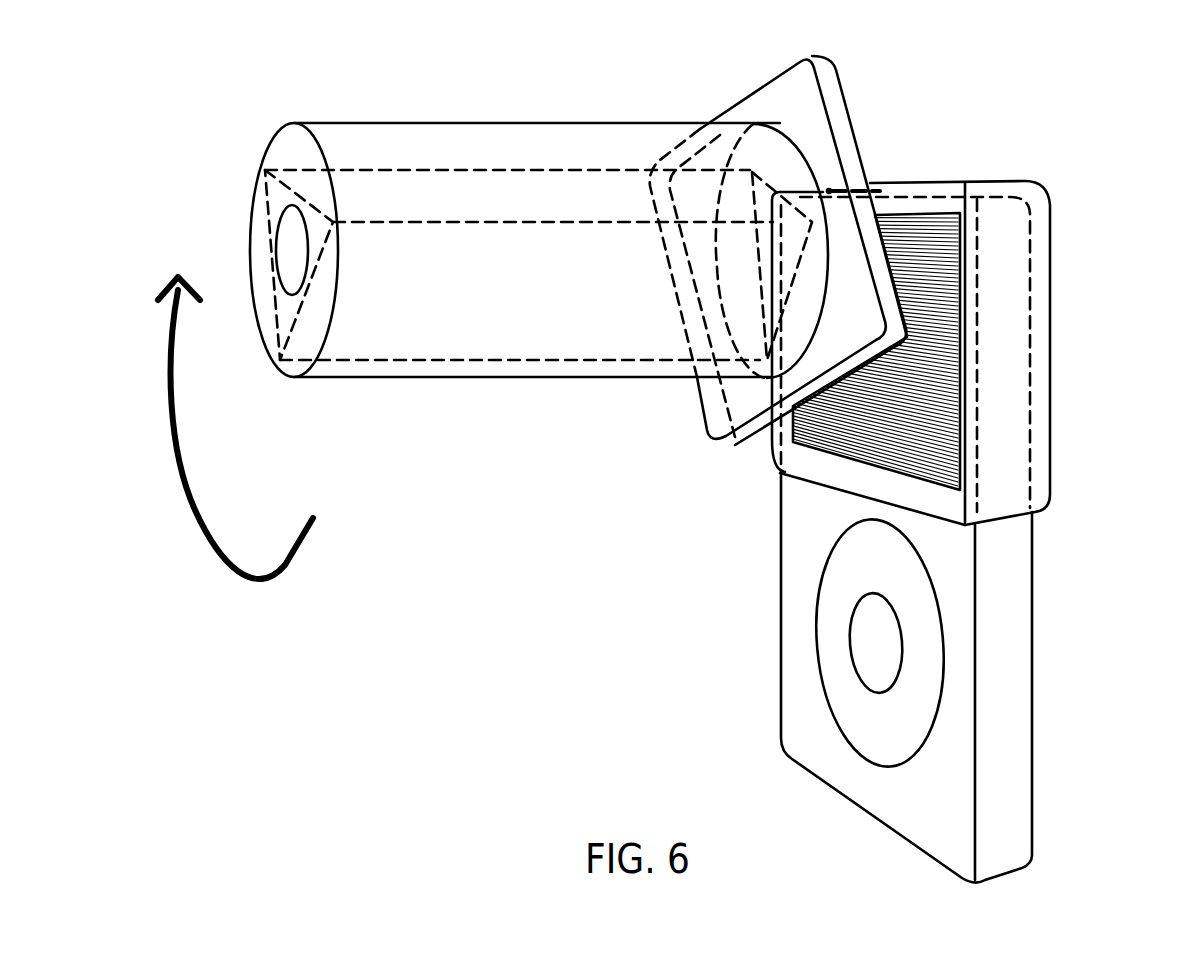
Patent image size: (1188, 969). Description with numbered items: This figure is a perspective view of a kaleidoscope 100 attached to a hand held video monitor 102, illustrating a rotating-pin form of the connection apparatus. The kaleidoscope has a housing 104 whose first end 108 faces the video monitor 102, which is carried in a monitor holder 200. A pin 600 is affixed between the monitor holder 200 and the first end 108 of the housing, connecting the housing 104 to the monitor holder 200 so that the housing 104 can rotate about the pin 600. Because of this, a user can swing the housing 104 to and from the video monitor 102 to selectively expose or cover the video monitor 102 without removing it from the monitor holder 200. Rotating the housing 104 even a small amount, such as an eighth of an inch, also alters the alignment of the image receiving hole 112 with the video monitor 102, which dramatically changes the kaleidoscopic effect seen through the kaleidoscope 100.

The kaleidoscope 100 is at (254, 99).
The video monitor 102 is at (863, 440).
The housing 104 is at (460, 123).
The first end of the housing 108 is at (855, 130).
The image receiving hole 112 is at (780, 188).
The monitor holder 200 is at (1052, 262).
The pin 600 is at (882, 190).